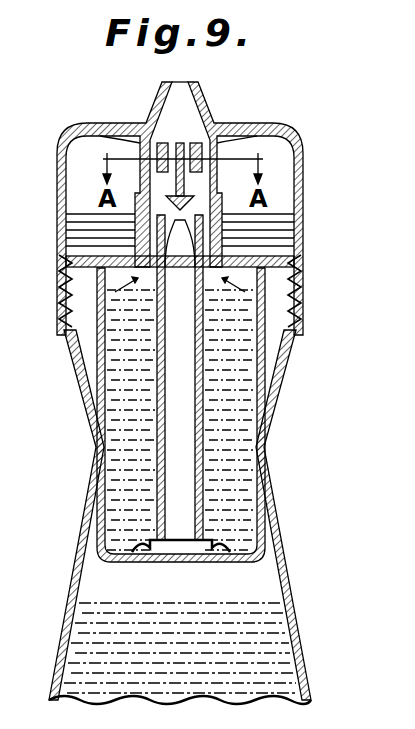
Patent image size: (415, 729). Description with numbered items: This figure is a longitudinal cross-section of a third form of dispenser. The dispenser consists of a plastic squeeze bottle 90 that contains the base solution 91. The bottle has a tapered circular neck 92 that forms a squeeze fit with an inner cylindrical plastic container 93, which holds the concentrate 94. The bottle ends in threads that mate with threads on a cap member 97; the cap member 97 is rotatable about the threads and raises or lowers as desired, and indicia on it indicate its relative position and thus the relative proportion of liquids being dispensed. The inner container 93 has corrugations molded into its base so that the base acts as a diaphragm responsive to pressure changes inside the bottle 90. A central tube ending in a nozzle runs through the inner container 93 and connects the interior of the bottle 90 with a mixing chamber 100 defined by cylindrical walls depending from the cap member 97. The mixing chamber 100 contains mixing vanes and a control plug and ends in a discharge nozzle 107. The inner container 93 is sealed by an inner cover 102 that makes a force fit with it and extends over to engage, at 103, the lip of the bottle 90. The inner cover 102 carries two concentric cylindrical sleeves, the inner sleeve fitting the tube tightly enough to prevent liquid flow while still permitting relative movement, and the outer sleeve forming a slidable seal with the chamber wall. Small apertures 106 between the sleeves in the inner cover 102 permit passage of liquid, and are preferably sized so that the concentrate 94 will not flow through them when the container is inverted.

The plastic squeeze bottle 90 is at (296, 634).
The base solution 91 is at (108, 662).
The tapered circular neck 92 is at (265, 417).
The inner cylindrical plastic container 93 is at (100, 353).
The concentrate 94 is at (133, 427).
The cap member 97 is at (286, 126).
The mixing chamber 100 is at (180, 137).
The inner cover 102 is at (236, 258).
The engagement with lip of bottle 103 is at (297, 238).
The small apertures 106 is at (245, 272).
The discharge nozzle 107 is at (163, 80).